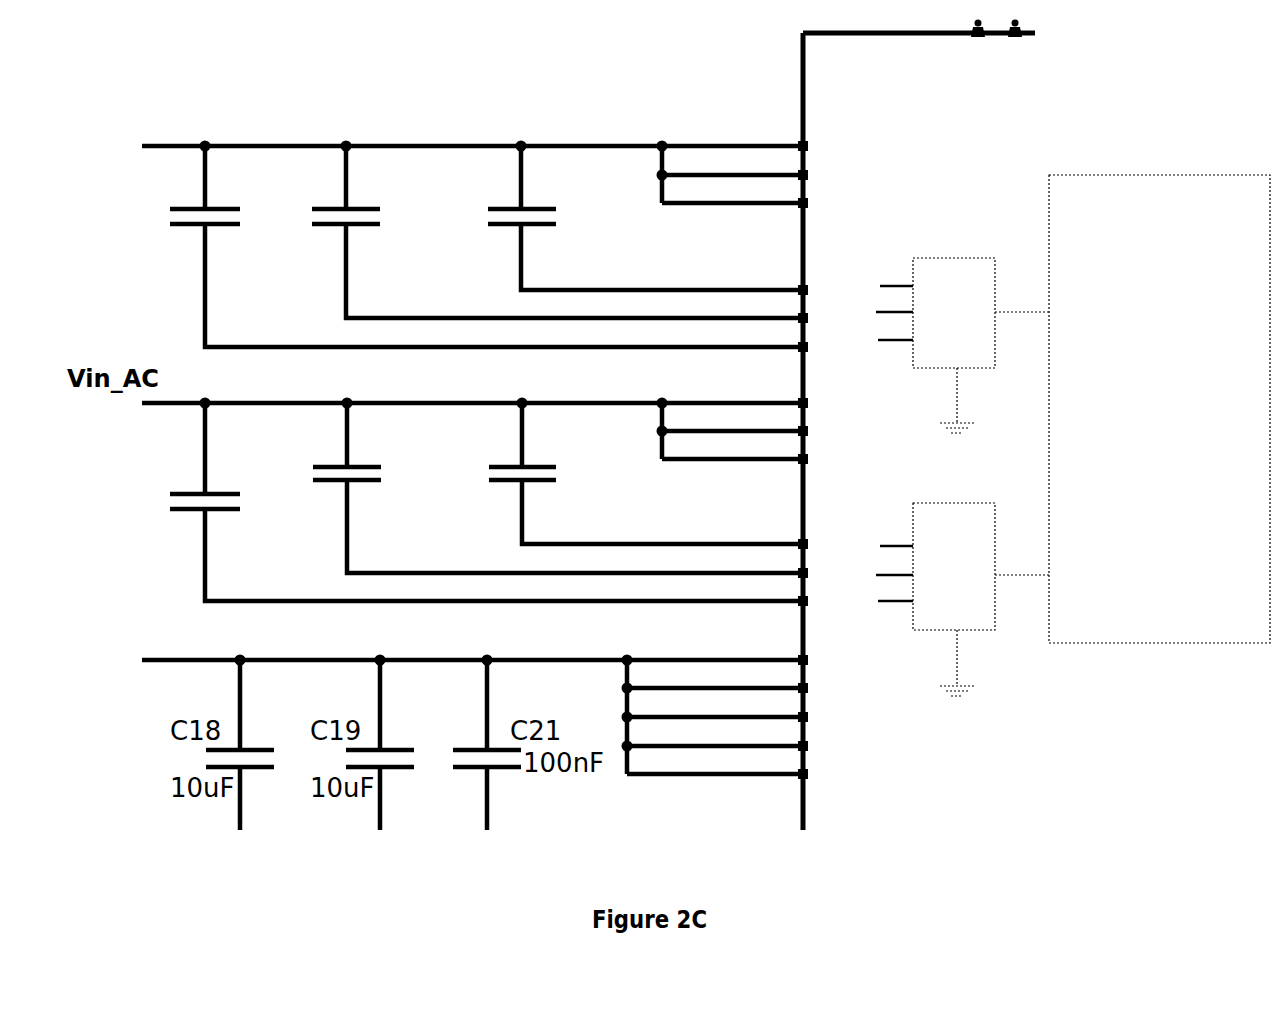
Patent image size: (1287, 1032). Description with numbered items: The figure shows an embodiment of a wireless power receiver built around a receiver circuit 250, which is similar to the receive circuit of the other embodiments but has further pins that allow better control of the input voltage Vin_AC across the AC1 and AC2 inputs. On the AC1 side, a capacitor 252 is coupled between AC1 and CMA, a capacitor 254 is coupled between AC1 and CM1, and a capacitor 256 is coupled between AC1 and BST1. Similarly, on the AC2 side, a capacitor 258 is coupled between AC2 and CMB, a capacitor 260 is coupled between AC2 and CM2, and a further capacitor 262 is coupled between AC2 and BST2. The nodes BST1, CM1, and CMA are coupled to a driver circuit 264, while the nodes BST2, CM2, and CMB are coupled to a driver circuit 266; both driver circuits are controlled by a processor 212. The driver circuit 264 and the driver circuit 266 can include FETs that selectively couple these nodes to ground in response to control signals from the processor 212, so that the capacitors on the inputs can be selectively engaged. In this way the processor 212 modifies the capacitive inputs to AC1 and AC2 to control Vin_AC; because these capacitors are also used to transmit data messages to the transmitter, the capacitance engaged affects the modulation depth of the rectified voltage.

The receiver circuit 250 is at (830, 75).
The capacitor 252 is at (170, 210).
The capacitor 254 is at (310, 218).
The capacitor 256 is at (535, 207).
The capacitor 258 is at (175, 490).
The capacitor 260 is at (318, 473).
The capacitor C12 262 is at (502, 462).
The driver circuit 264 is at (981, 345).
The driver circuit 266 is at (981, 599).
The processor 212 is at (1159, 409).